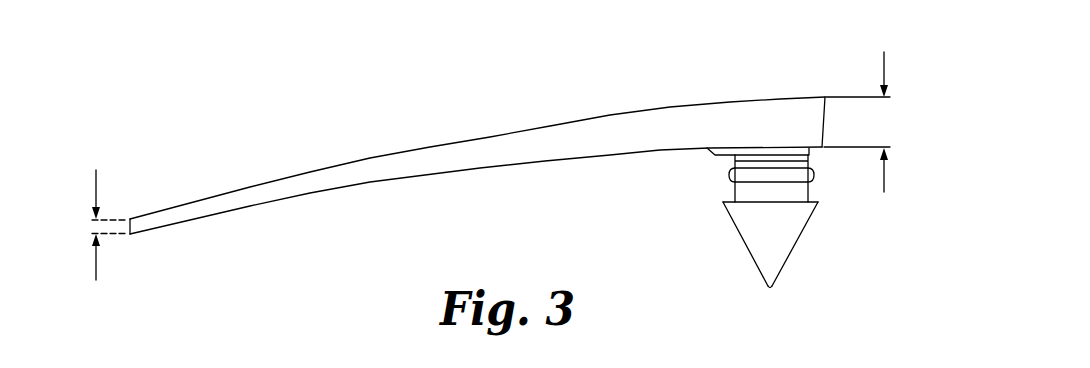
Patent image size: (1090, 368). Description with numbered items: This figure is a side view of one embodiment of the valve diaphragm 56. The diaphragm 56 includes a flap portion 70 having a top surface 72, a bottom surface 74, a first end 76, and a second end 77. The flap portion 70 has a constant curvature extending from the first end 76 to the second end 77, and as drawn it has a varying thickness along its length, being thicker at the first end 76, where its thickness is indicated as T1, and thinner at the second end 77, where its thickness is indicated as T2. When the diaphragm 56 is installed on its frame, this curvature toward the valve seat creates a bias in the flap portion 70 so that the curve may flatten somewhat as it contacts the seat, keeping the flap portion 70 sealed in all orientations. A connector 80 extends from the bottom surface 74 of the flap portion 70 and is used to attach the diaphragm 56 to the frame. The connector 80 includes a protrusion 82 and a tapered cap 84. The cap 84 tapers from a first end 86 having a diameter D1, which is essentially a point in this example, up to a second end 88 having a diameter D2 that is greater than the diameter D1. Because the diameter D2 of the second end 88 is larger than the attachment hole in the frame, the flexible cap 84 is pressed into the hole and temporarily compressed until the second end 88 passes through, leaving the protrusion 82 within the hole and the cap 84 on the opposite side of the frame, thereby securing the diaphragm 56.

The valve diaphragm 56 is at (436, 88).
The flap portion 70 is at (624, 124).
The top surface 72 is at (531, 128).
The bottom surface 74 is at (539, 161).
The first end 76 is at (827, 118).
The second end 77 is at (127, 230).
The connector 80 is at (735, 190).
The protrusion 82 is at (813, 177).
The tapered cap 84 is at (793, 233).
The first end 86 is at (772, 286).
The second end 88 is at (818, 202).
The thickness at first end T1 is at (886, 60).
The thickness at second end T2 is at (96, 182).
The diameter of first end of cap D1 is at (769, 288).
The diameter of second end of cap D2 is at (723, 202).